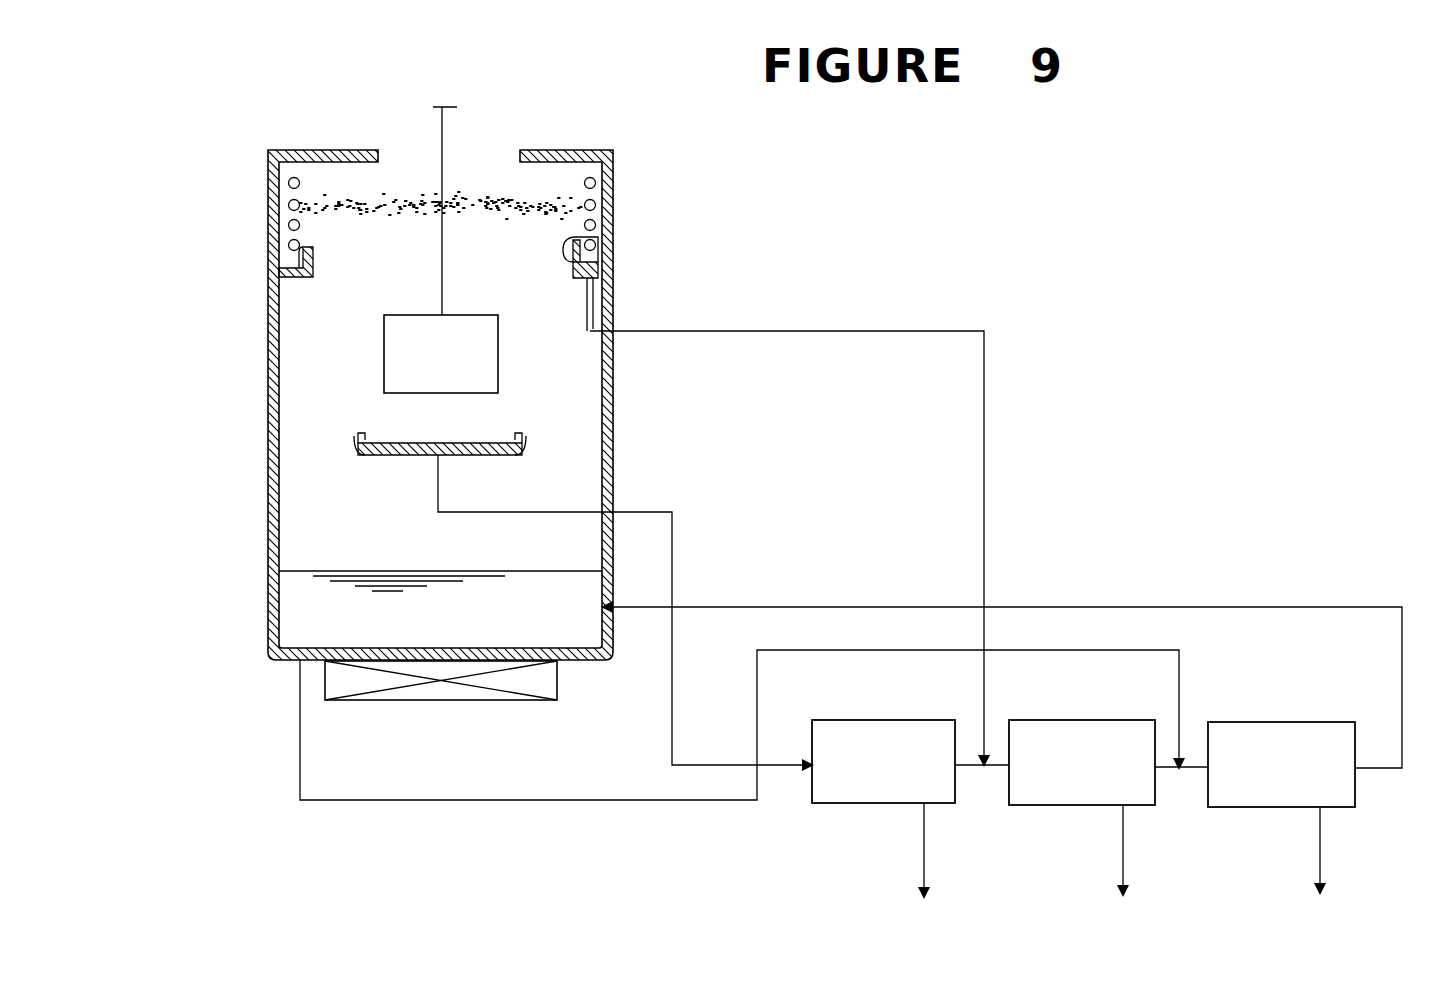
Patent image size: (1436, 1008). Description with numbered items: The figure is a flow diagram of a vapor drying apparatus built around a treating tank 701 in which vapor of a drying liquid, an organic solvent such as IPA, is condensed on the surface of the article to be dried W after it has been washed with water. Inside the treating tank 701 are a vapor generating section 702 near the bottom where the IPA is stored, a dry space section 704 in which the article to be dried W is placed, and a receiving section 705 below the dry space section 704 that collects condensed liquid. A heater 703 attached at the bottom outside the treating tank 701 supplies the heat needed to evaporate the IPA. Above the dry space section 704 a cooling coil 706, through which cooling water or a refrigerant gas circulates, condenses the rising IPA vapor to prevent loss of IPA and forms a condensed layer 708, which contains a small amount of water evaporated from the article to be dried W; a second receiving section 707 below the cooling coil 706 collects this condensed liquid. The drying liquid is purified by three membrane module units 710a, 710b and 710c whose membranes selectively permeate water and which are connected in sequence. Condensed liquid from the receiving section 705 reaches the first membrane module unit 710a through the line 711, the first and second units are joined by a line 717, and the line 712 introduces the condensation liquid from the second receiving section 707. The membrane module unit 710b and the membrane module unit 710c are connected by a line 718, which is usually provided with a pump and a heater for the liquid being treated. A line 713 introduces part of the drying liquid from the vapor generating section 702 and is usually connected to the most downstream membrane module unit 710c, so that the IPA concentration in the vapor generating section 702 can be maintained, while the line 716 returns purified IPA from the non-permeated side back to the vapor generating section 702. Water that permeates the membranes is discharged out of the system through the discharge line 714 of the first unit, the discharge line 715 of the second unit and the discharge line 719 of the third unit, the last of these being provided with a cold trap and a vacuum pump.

The treating tank 701 is at (268, 333).
The vapor generating section 702 is at (312, 605).
The heater 703 is at (433, 693).
The dry space section 704 is at (367, 357).
The receiving section 705 is at (365, 456).
The cooling coil 706 is at (597, 207).
The second receiving section 707 is at (597, 238).
The condensed layer 708 is at (409, 200).
The membrane module unit 710a is at (868, 755).
The membrane module unit 710b is at (1083, 755).
The membrane module unit 710c is at (1270, 753).
The line 711 is at (650, 510).
The line 712 is at (838, 332).
The line 713 is at (527, 802).
The discharge line 714 is at (923, 857).
The discharge line 715 is at (1122, 857).
The line 716 is at (1163, 605).
The line 717 is at (973, 768).
The line 718 is at (1170, 770).
The discharge line 719 is at (1318, 848).
The article to be dried W is at (478, 338).